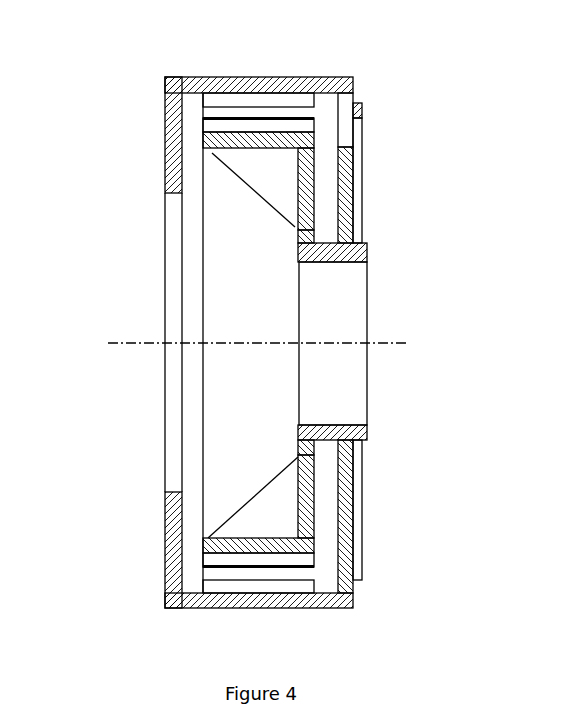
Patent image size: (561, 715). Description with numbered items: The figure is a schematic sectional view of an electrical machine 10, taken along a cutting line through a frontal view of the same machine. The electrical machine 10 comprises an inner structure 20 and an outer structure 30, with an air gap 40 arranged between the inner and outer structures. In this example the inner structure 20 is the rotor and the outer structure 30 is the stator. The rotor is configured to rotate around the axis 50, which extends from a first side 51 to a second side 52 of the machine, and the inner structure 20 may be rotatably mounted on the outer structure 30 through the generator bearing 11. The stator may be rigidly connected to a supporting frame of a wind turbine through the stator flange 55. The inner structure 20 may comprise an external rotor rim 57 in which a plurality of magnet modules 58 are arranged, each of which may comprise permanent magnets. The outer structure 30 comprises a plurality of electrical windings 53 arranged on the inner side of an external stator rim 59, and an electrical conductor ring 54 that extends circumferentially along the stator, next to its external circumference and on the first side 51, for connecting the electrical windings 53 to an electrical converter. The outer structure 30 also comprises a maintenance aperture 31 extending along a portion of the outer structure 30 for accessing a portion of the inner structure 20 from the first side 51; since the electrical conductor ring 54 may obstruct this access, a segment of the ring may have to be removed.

The electrical machine 10 is at (70, 191).
The generator bearing 11 is at (300, 442).
The inner structure 20 is at (315, 487).
The outer structure 30 is at (362, 208).
The maintenance aperture 31 is at (353, 93).
The air gap 40 is at (192, 570).
The axis 50 is at (148, 343).
The first side 51 is at (447, 342).
The second side 52 is at (108, 313).
The electrical windings 53 is at (230, 100).
The electrical conductor ring 54 is at (362, 112).
The stator flange 55 is at (368, 430).
The external rotor rim 57 is at (240, 555).
The magnet modules 58 is at (296, 565).
The external stator rim 59 is at (300, 82).